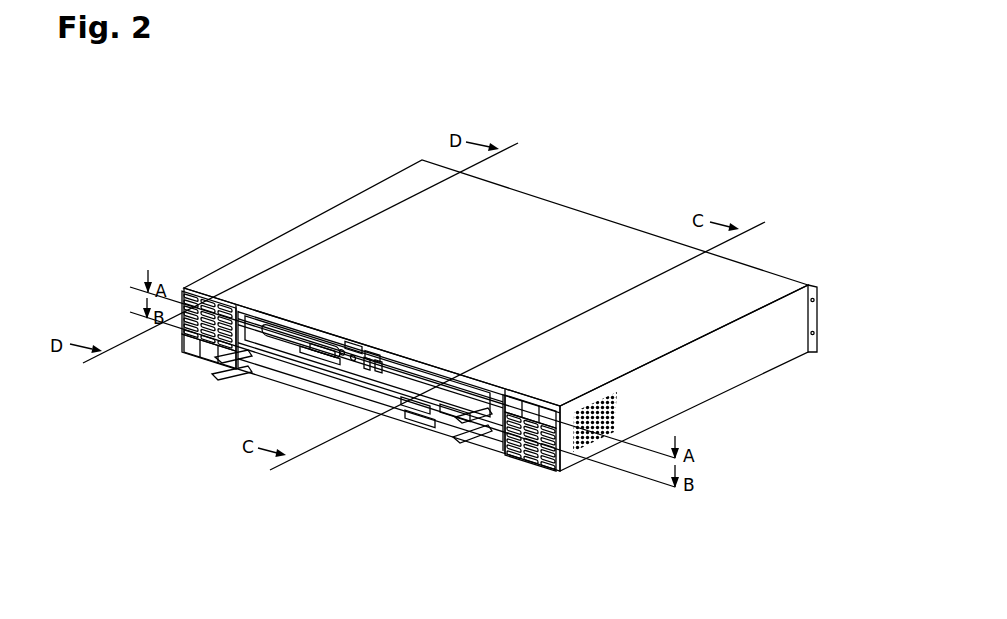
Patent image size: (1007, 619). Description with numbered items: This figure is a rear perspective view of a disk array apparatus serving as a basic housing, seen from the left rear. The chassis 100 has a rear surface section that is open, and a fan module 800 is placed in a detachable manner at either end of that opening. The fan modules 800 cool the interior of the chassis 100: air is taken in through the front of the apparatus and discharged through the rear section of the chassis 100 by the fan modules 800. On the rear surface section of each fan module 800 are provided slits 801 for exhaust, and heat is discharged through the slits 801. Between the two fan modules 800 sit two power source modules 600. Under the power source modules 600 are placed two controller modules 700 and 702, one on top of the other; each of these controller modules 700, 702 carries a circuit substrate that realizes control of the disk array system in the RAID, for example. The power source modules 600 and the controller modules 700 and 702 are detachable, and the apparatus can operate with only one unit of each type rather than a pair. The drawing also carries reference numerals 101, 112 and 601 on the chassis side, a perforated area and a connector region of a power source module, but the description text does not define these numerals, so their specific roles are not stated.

The chassis 100 is at (325, 222).
The side plate 101 is at (818, 352).
The ventilation holes 112 is at (618, 400).
The power source module 600 is at (317, 367).
The connector opening 601 is at (302, 365).
The controller module 700 is at (285, 375).
The controller module 702 is at (222, 363).
The fan module 800 is at (213, 358).
The slits 801 is at (197, 357).